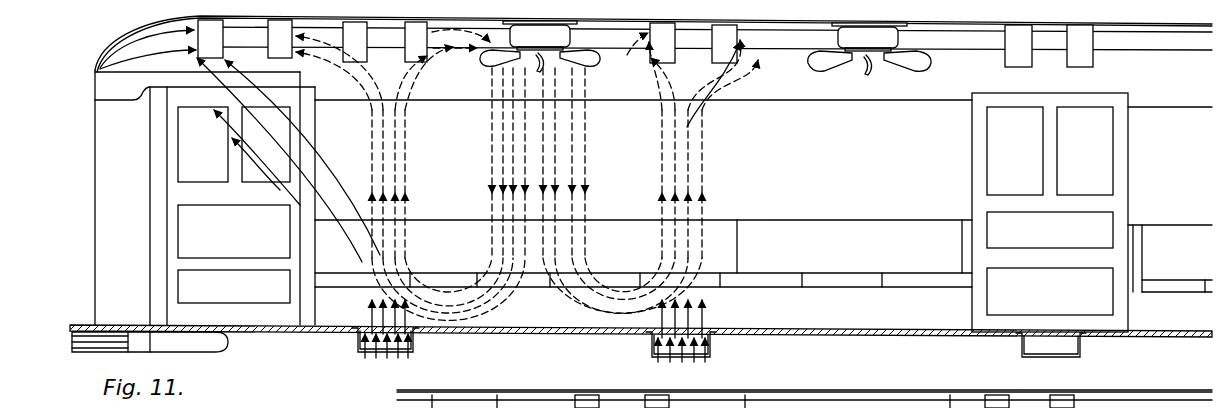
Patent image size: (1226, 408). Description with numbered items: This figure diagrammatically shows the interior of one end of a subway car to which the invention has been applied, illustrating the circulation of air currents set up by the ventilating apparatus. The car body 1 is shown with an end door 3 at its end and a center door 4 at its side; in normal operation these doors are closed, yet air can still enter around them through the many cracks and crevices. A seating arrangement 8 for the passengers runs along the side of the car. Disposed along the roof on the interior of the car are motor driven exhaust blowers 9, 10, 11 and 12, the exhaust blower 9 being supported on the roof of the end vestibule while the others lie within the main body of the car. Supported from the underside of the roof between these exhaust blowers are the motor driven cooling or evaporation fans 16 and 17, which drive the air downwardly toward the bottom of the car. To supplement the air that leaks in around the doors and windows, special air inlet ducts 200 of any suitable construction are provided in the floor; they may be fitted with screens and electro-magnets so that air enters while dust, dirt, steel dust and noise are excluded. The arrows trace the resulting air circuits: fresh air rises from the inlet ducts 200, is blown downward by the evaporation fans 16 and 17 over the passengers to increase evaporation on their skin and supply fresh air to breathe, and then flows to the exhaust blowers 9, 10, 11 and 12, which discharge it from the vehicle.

The car body 1 is at (105, 257).
The end doors 3 is at (241, 321).
The center doors 4 is at (1050, 212).
The seating arrangement 8 is at (849, 288).
The motor driven exhaust blower 9 is at (245, 39).
The motor driven exhaust blower 10 is at (385, 42).
The motor driven exhaust blower 11 is at (693, 43).
The motor driven exhaust blower 12 is at (1049, 46).
The cooling or evaporation fan 16 is at (540, 46).
The cooling or evaporation fan 17 is at (869, 49).
The special air inlet ducts 200 is at (414, 345).